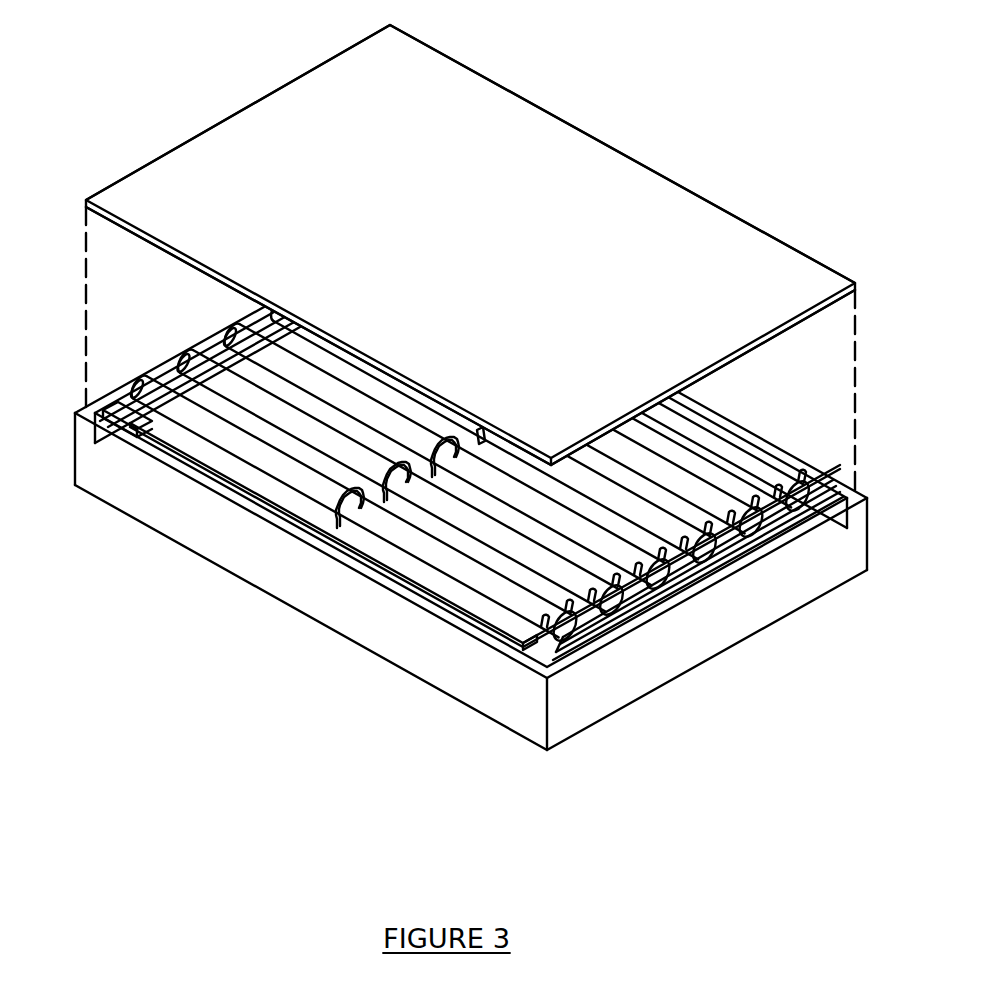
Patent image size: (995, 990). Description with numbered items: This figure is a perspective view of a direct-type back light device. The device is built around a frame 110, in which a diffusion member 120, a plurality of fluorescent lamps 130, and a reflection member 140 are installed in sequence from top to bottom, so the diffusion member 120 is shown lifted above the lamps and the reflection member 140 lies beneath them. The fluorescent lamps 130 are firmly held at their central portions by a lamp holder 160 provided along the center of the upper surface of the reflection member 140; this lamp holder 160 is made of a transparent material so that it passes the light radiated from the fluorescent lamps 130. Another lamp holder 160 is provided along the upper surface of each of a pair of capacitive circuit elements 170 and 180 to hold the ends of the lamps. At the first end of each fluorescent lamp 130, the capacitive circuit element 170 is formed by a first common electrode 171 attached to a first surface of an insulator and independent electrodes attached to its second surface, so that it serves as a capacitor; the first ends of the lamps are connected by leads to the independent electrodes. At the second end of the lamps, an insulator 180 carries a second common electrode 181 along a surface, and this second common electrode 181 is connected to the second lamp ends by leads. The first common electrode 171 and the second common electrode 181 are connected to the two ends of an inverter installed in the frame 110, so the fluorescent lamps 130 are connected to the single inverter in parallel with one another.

The frame 110 is at (326, 633).
The diffusion member 120 is at (606, 162).
The fluorescent lamps 130 is at (263, 465).
The reflection member 140 is at (498, 620).
The lamp holder 160 is at (137, 392).
The capacitive circuit element 170 is at (108, 412).
The first common electrode 171 is at (135, 402).
The insulator 180 is at (563, 655).
The second common electrode 181 is at (617, 627).